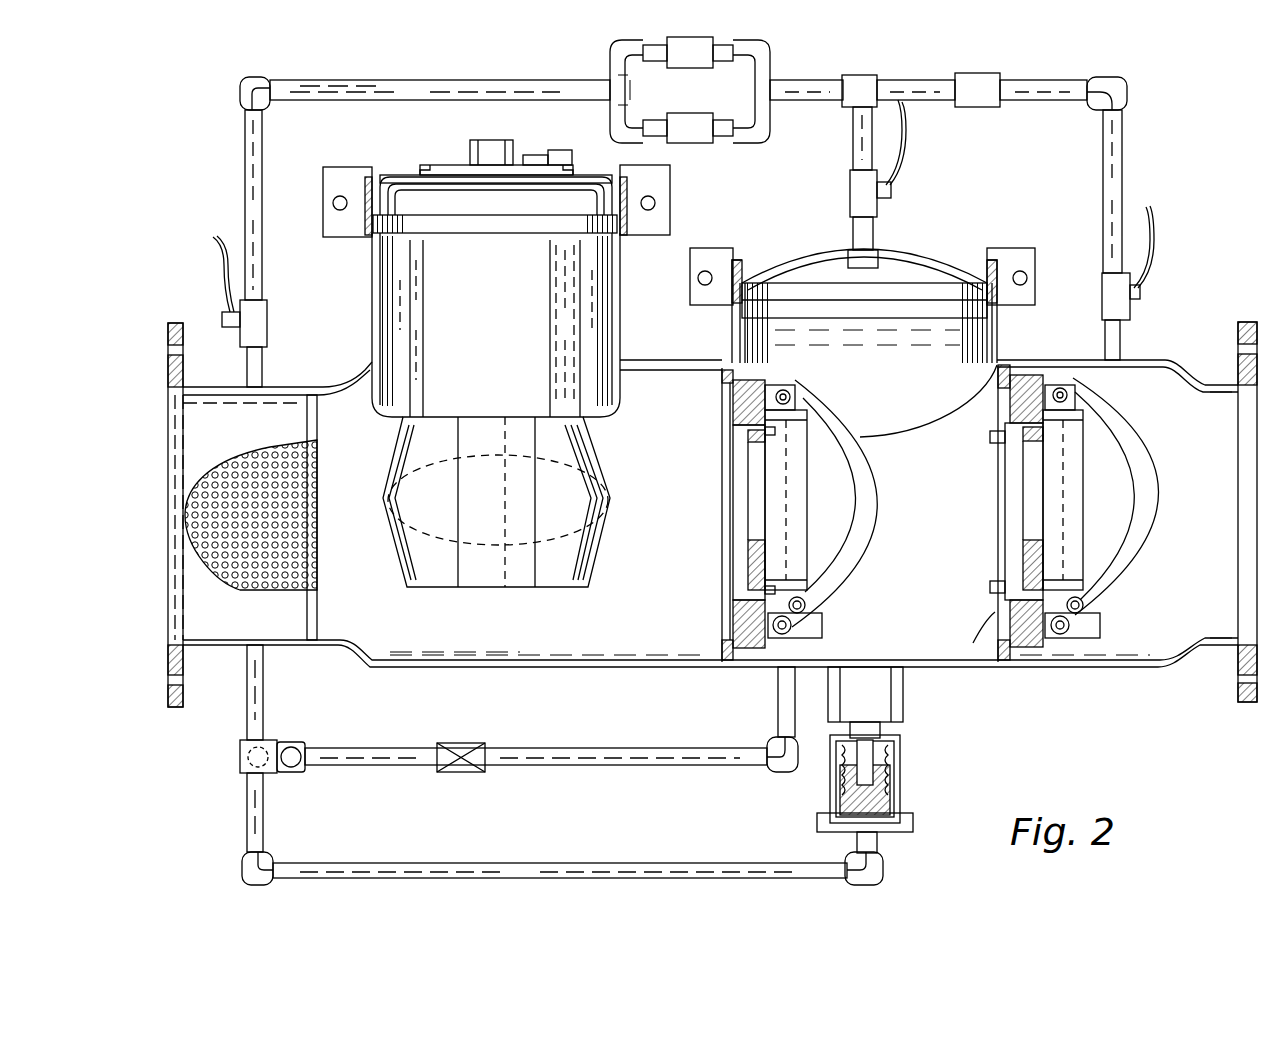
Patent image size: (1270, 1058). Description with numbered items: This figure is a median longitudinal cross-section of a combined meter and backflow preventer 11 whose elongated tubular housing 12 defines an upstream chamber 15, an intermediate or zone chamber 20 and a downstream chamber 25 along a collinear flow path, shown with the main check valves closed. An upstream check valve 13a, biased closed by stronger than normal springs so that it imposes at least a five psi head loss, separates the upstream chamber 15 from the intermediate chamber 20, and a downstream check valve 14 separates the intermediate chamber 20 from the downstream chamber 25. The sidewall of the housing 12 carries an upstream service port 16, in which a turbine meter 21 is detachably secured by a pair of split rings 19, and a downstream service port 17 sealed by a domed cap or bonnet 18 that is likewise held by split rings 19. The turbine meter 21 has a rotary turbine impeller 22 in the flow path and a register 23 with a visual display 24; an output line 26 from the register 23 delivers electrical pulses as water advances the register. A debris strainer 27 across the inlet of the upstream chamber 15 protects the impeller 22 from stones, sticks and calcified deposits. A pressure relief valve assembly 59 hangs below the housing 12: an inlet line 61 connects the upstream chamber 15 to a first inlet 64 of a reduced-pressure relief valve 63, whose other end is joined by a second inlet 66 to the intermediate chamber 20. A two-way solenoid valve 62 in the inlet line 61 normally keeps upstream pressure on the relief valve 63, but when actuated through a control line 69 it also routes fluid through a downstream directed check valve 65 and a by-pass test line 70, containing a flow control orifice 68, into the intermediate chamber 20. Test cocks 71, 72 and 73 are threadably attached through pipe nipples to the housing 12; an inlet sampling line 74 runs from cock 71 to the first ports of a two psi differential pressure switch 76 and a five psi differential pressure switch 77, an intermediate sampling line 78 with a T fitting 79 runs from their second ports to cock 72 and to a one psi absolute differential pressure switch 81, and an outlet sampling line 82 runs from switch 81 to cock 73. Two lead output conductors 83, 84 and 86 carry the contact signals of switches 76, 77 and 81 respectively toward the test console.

The combined meter and backflow preventer 11 is at (185, 232).
The elongated tubular housing 12 is at (350, 387).
The upstream check valve 13a is at (720, 534).
The downstream check valve 14 is at (1168, 556).
The upstream chamber 15 is at (205, 640).
The upstream service port 16 is at (380, 288).
The downstream service port 17 is at (965, 350).
The bonnet 18 is at (905, 255).
The split rings 19 is at (670, 226).
The intermediate chamber 20 is at (973, 645).
The turbine meter 21 is at (560, 286).
The rotary turbine impeller 22 is at (405, 455).
The register 23 is at (415, 185).
The visual display 24 is at (490, 140).
The downstream chamber 25 is at (1220, 610).
The output line 26 is at (548, 160).
The debris strainer 27 is at (262, 460).
The pressure relief valve assembly 59 is at (596, 765).
The inlet line 61 is at (263, 684).
The two-way solenoid valve 62 is at (240, 770).
The pressure relief valve 63 is at (900, 765).
The first inlet 64 is at (885, 834).
The downstream directed check valve 65 is at (292, 773).
The second inlet 66 is at (880, 690).
The flow control orifice 68 is at (465, 743).
The control line 69 is at (237, 762).
The by-pass test line 70 is at (572, 748).
The test cock 71 is at (267, 322).
The test cock 72 is at (850, 194).
The test cock 73 is at (1148, 270).
The inlet sampling line 74 is at (345, 80).
The two psi differential pressure switch 76 is at (672, 40).
The five psi differential pressure switch 77 is at (680, 143).
The intermediate sampling line 78 is at (805, 80).
The T fitting 79 is at (872, 76).
The one psi absolute differential pressure switch 81 is at (990, 107).
The outlet sampling line 82 is at (1103, 190).
The two lead output conductor 83 is at (704, 76).
The two lead output conductor 84 is at (711, 155).
The two lead output conductor 86 is at (996, 80).